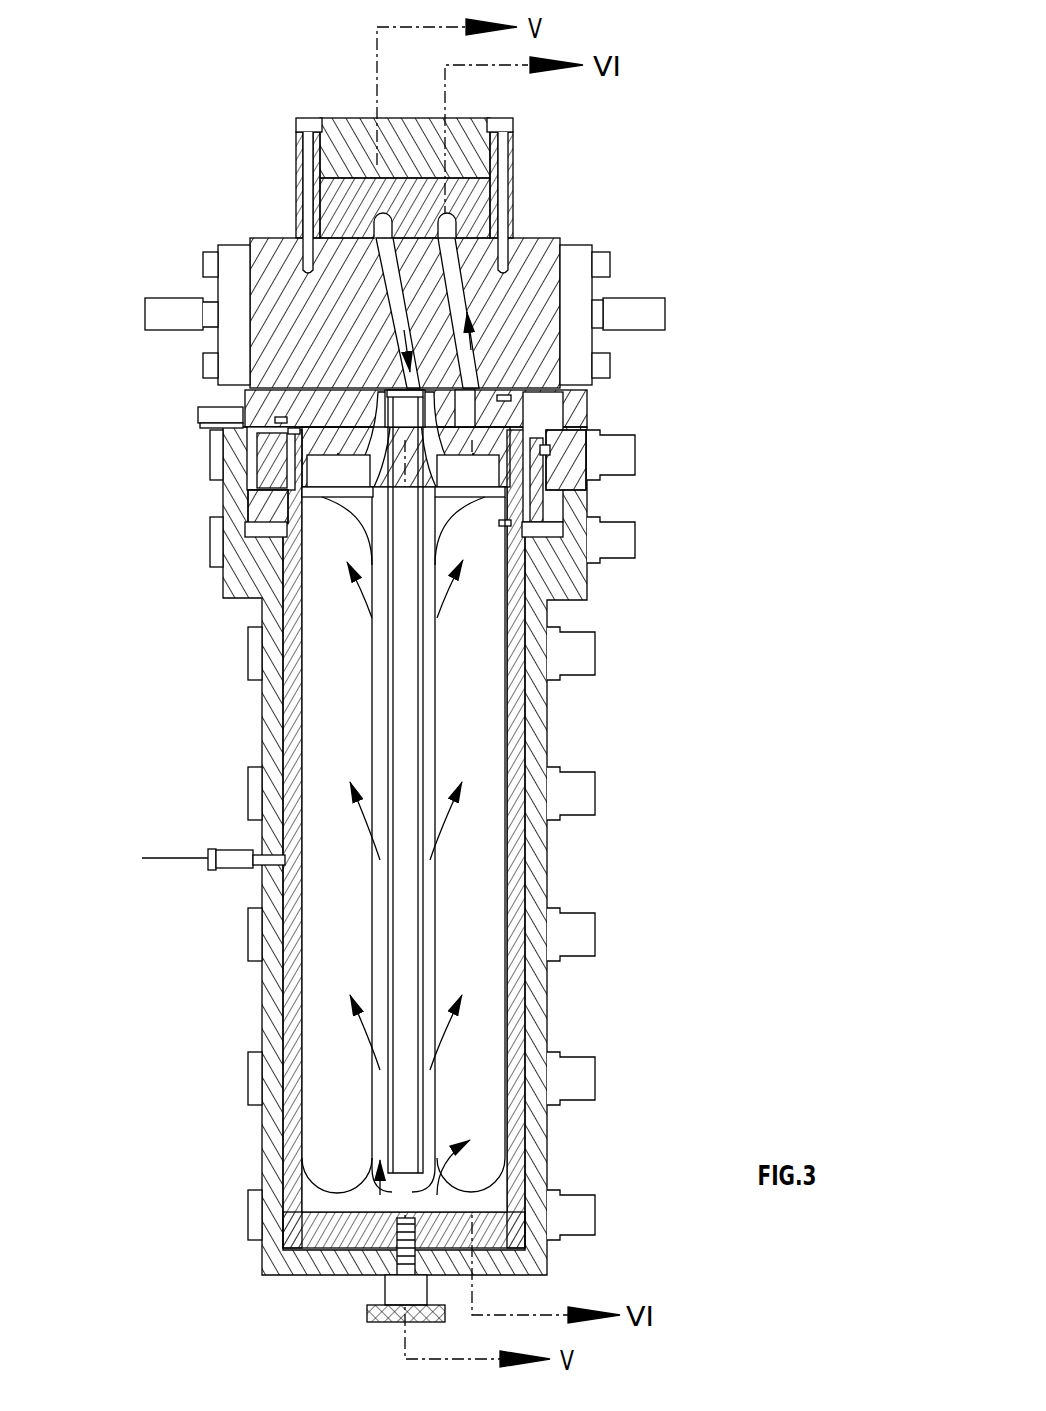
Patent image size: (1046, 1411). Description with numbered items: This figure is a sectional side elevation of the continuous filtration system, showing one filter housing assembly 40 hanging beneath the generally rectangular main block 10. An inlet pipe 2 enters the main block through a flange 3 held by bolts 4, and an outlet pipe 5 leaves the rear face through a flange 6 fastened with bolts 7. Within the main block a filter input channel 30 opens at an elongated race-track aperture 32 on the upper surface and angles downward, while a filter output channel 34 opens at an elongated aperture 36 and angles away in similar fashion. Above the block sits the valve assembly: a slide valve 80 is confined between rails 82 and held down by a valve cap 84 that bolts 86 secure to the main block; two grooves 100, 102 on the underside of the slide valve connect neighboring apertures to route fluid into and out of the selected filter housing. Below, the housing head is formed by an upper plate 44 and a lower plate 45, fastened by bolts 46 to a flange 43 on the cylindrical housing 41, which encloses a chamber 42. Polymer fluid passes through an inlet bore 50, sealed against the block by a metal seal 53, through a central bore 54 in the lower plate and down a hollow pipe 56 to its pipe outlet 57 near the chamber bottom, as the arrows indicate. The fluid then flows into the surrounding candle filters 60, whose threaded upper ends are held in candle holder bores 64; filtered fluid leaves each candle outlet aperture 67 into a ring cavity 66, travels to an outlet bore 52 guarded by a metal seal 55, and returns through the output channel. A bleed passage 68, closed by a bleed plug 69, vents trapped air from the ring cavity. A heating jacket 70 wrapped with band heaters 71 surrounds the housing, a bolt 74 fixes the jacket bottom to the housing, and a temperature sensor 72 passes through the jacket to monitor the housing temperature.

The inlet pipe 2 is at (150, 313).
The flange 3 is at (228, 282).
The bolts 4 is at (205, 260).
The outlet pipe 5 is at (660, 312).
The flange 6 is at (600, 355).
The bolts 7 is at (605, 270).
The main block 10 is at (555, 248).
The filter input channel 30 is at (255, 395).
The elongated aperture 32 is at (385, 297).
The filter output channel 34 is at (473, 285).
The elongated aperture 36 is at (462, 256).
The filter housing assembly 40 is at (632, 716).
The housing 41 is at (300, 1232).
The chamber 42 is at (310, 1190).
The flange 43 is at (262, 502).
The upper plate 44 is at (265, 405).
The lower plate 45 is at (270, 442).
The bolts 46 is at (535, 450).
The inlet bore 50 is at (372, 560).
The outlet bore 52 is at (520, 480).
The metal seal 53 is at (310, 527).
The central bore 54 is at (515, 520).
The metal seal 55 is at (505, 397).
The hollow pipe 56 is at (410, 612).
The pipe outlet 57 is at (390, 1187).
The candle filters 60 is at (495, 895).
The candle holder bores 64 is at (270, 495).
The ring cavity 66 is at (548, 450).
The candle outlet aperture 67 is at (292, 432).
The bleed passage 68 is at (285, 422).
The bleed plug 69 is at (208, 422).
The heating jacket 70 is at (548, 1145).
The band heaters 71 is at (585, 1080).
The temperature sensor 72 is at (230, 852).
The bolt 74 is at (390, 1290).
The slide valve 80 is at (326, 195).
The rails 82 is at (300, 212).
The valve cap 84 is at (356, 126).
The bolts 86 is at (500, 150).
The groove 100 is at (384, 218).
The groove 102 is at (450, 220).